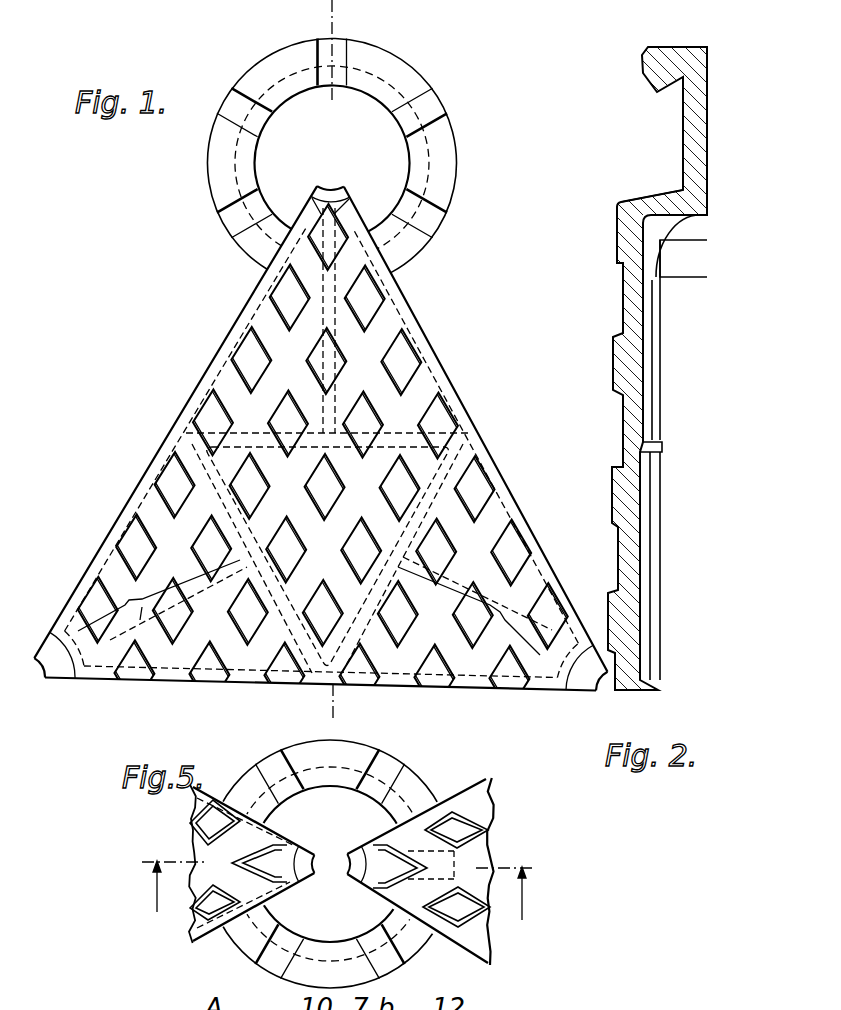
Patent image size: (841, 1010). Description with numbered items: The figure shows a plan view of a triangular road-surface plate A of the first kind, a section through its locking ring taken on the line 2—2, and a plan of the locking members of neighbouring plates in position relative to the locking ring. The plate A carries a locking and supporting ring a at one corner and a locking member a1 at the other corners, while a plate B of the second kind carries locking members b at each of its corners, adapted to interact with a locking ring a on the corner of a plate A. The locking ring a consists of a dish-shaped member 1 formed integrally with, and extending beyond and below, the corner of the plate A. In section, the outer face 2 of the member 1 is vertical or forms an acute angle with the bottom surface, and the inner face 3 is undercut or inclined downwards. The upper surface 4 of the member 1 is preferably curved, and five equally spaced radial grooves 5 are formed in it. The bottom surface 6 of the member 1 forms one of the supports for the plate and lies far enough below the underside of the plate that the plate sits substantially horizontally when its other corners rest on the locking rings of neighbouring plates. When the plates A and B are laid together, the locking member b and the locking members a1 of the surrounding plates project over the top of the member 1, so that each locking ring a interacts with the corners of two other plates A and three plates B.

In FIG. 1, the dish-shaped member 1 is at (331, 155).
In FIG. 2, the dish-shaped member 1 is at (690, 141).
In FIG. 5, the dish-shaped member 1 is at (330, 864).
In FIG. 1, the outer face 2 is at (333, 17).
In FIG. 2, the outer face 2 is at (662, 47).
In FIG. 2, the inner face 3 is at (658, 92).
In FIG. 2, the upper surface 4 is at (645, 78).
In FIG. 1, the radial grooves 5 is at (332, 138).
In FIG. 5, the radial grooves 5 is at (440, 847).
In FIG. 2, the bottom surface 6 is at (710, 148).
In FIG. 5, the bottom surface 6 is at (339, 901).
In FIG. 1, the triangular plate A is at (320, 449).
In FIG. 2, the triangular plate A is at (626, 300).
In FIG. 5, the triangular plate A is at (251, 864).
In FIG. 1, the locking ring a is at (343, 195).
In FIG. 2, the locking ring a is at (652, 186).
In FIG. 5, the locking ring a is at (331, 832).
In FIG. 1, the locking member a1 is at (571, 673).
In FIG. 5, the locking member b is at (357, 883).
In FIG. 5, the triangular plate B is at (420, 871).